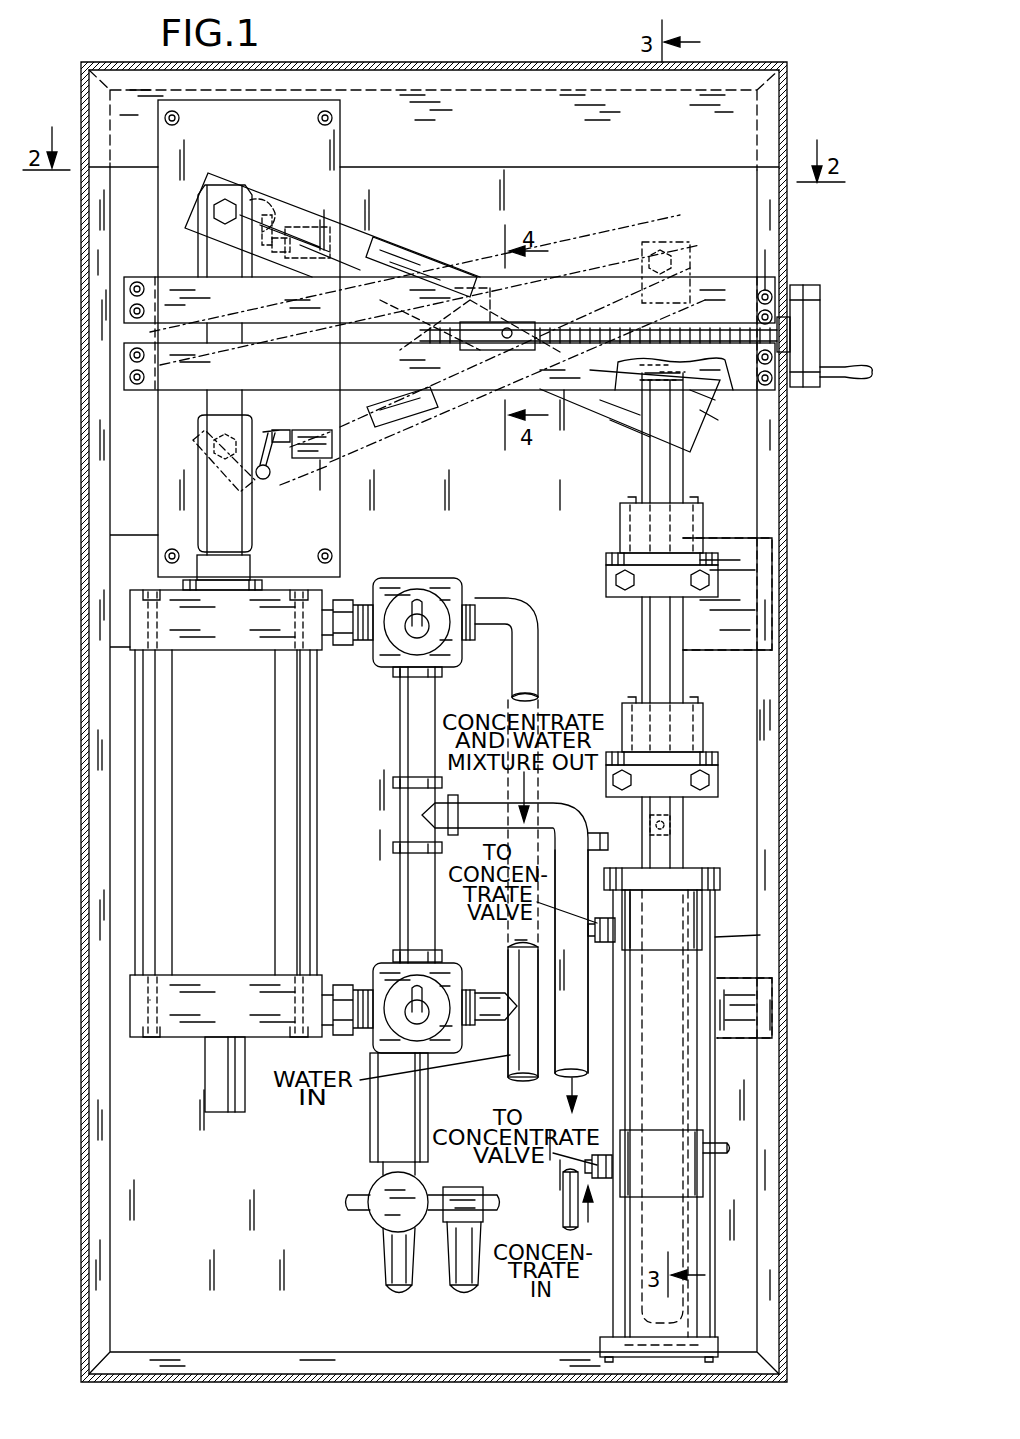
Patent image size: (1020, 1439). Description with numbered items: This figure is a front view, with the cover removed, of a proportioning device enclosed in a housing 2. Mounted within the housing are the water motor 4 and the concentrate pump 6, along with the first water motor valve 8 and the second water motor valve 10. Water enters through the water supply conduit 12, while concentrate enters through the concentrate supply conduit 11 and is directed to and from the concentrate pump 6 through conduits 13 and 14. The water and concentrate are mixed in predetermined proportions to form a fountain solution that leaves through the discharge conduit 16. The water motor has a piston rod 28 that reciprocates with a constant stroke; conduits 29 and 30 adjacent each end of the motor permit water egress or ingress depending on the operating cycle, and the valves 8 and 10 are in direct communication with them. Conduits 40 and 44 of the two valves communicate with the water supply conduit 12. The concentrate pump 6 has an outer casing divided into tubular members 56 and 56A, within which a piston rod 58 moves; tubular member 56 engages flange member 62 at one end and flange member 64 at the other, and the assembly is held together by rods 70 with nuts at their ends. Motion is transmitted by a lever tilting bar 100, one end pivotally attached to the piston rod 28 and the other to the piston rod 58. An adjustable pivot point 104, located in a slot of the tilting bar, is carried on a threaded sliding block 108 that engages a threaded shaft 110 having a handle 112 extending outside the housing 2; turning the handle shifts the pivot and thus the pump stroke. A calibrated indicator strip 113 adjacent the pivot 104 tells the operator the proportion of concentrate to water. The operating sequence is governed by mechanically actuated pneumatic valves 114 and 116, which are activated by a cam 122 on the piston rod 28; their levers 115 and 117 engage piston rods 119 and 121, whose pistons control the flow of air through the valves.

The housing 2 is at (790, 700).
The water motor 4 is at (238, 841).
The concentrate pump 6 is at (581, 1115).
The first water motor valve 8 is at (447, 595).
The second water motor valve 10 is at (388, 972).
The concentrate supply conduit 11 is at (545, 1205).
The water supply conduit 12 is at (517, 1057).
The concentrate conduit 13 is at (613, 1165).
The concentrate conduit 14 is at (622, 930).
The discharge conduit 16 is at (568, 1058).
The piston rod 28 is at (227, 515).
The first conduit 29 is at (353, 646).
The second conduit 30 is at (358, 997).
The conduit 40 is at (515, 628).
The conduit 44 is at (487, 1000).
The tubular member 56 is at (690, 1070).
The tubular member 56A is at (688, 1228).
The piston rod 58 is at (652, 615).
The flange member 62 is at (667, 948).
The flange member 64 is at (657, 1133).
The rods 70 is at (760, 935).
The lever tilting bar 100 is at (410, 258).
The adjustable pivot point 104 is at (505, 340).
The threaded sliding block 108 is at (487, 328).
The threaded shaft 110 is at (587, 330).
The handle 112 is at (800, 317).
The indicator strip 113 is at (615, 318).
The pneumatic valve 114 is at (343, 233).
The lever 115 is at (300, 226).
The pneumatic valve 116 is at (334, 447).
The lever 117 is at (271, 471).
The piston rod 119 is at (449, 338).
The piston rod 121 is at (282, 430).
The cam 122 is at (266, 208).